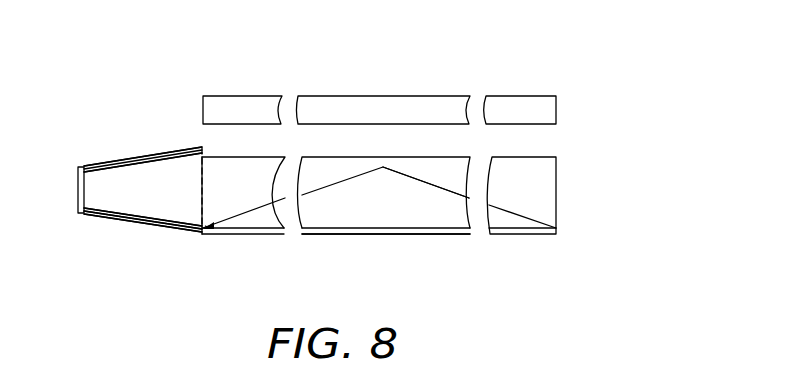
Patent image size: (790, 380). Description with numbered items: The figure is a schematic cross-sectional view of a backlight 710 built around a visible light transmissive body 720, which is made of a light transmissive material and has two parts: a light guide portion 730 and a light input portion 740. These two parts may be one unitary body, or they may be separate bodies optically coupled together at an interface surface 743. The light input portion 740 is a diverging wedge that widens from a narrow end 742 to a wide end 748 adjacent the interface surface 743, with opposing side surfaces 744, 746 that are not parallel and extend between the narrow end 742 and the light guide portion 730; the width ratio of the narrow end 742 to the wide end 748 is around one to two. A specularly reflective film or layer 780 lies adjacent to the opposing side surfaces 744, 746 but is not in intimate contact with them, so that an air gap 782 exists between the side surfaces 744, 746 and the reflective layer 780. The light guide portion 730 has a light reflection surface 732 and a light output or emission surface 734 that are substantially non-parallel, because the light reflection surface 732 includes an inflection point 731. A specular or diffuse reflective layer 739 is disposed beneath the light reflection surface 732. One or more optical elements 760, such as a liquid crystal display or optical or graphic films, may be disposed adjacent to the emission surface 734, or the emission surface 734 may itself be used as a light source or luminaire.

The backlight 710 is at (329, 60).
The visible light transmissive body 720 is at (610, 137).
The light guide portion 730 is at (566, 223).
The inflection point 731 is at (383, 168).
The light reflection surface 732 is at (448, 193).
The emission surface 734 is at (525, 157).
The reflective layer 739 is at (320, 235).
The light input portion 740 is at (77, 149).
The narrow end 742 is at (77, 188).
The interface surface 743 is at (213, 236).
The side surface 744 is at (166, 218).
The side surface 746 is at (114, 171).
The wide end 748 is at (200, 170).
The optical element 760 is at (439, 108).
The specularly reflective film or layer 780 is at (100, 217).
The air gap 782 is at (135, 167).